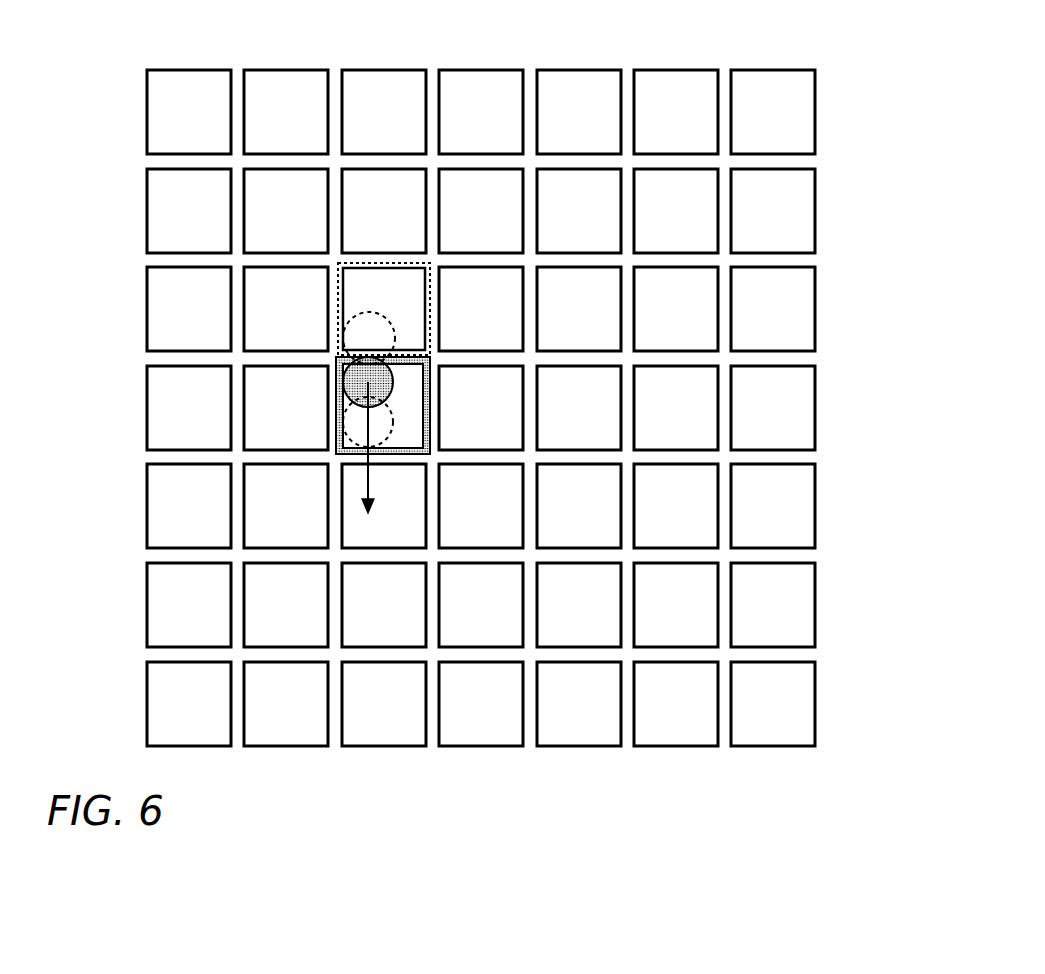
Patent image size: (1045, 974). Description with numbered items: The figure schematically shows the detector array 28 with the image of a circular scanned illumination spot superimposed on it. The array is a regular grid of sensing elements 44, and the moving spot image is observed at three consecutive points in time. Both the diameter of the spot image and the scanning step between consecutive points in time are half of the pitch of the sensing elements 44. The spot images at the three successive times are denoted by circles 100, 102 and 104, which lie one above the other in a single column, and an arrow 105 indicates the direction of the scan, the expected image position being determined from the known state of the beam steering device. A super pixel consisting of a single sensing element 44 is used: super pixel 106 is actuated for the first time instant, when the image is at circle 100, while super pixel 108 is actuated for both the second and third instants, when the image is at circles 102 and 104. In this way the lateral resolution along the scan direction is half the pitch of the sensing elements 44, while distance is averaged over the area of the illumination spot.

The detector array 28 is at (125, 57).
The sensing elements 44 is at (815, 110).
The super pixel 106 is at (384, 263).
The circle 100 is at (346, 330).
The circle 102 is at (394, 380).
The super pixel 108 is at (344, 377).
The circle 104 is at (345, 434).
The arrow 105 is at (370, 492).